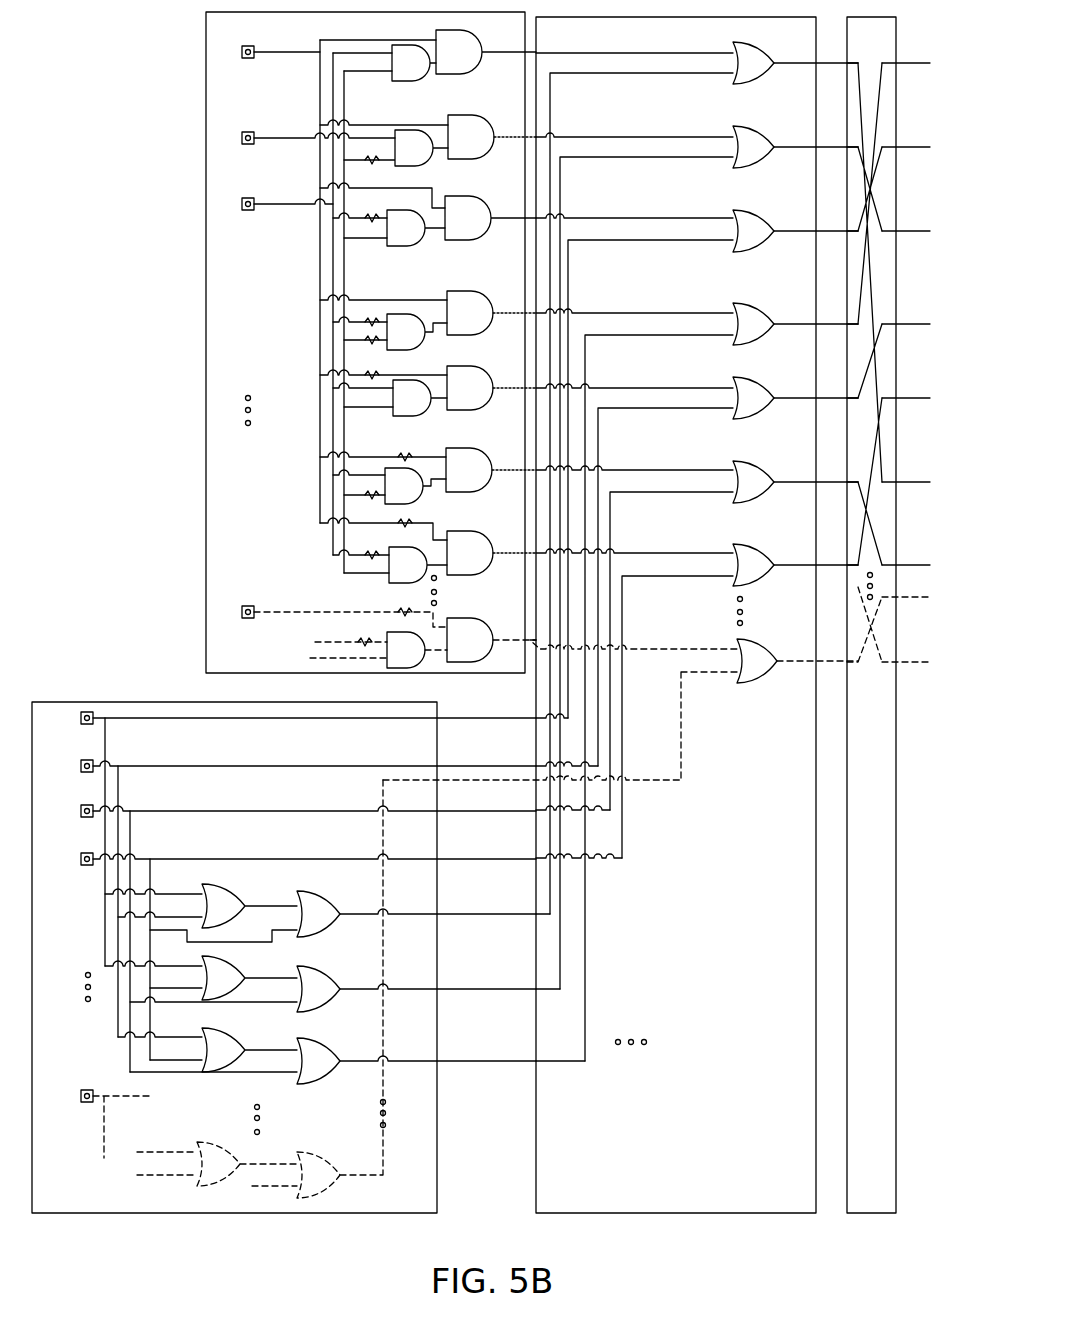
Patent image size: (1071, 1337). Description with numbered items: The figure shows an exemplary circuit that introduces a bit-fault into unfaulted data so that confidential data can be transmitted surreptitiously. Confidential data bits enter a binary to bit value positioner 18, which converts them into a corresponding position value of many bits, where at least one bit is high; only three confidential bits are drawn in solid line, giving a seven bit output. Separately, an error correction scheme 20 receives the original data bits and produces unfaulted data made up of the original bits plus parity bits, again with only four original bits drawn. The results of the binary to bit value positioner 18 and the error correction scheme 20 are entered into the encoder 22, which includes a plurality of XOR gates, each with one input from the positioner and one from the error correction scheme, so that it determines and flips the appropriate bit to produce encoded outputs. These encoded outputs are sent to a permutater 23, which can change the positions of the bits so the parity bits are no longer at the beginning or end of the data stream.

The binary to bit value positioner 18 is at (227, 671).
The error correction scheme 20 is at (409, 1200).
The encoder 22 is at (580, 1205).
The permutater 23 is at (880, 1205).